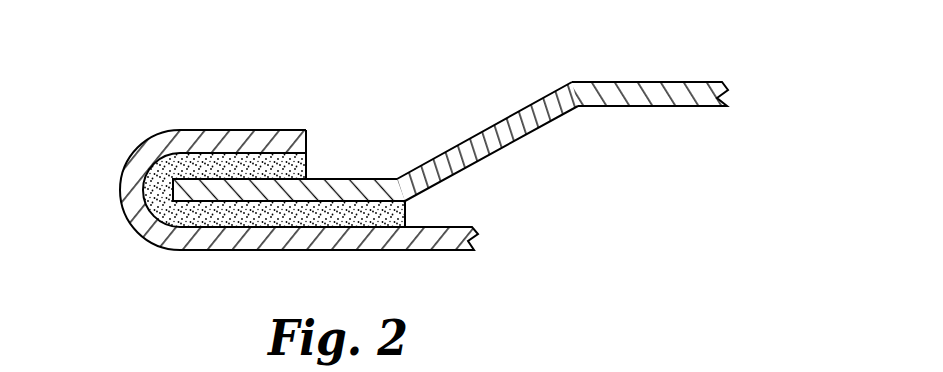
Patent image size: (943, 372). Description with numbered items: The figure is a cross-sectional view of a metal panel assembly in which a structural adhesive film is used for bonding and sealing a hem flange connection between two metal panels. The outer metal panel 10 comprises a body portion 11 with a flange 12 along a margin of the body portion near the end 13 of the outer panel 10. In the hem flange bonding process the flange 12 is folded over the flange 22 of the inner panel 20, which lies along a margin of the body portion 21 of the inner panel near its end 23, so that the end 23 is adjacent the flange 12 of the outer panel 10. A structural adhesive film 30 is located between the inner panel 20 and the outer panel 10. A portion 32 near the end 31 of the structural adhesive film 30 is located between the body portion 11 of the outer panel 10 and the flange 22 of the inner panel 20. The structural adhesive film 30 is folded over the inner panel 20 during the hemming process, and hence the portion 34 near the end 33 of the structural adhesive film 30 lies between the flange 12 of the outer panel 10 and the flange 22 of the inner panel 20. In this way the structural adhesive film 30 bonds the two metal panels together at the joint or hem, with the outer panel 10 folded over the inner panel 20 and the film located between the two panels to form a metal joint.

The outer metal panel 10 is at (319, 194).
The body portion 11 is at (328, 248).
The flange 12 is at (170, 141).
The end 13 is at (307, 142).
The inner panel 20 is at (678, 93).
The body portion 21 is at (513, 112).
The flange 22 is at (378, 180).
The end 23 is at (150, 218).
The structural adhesive film 30 is at (269, 194).
The end 31 is at (406, 214).
The portion 32 is at (276, 221).
The end 33 is at (307, 163).
The portion 34 is at (236, 163).